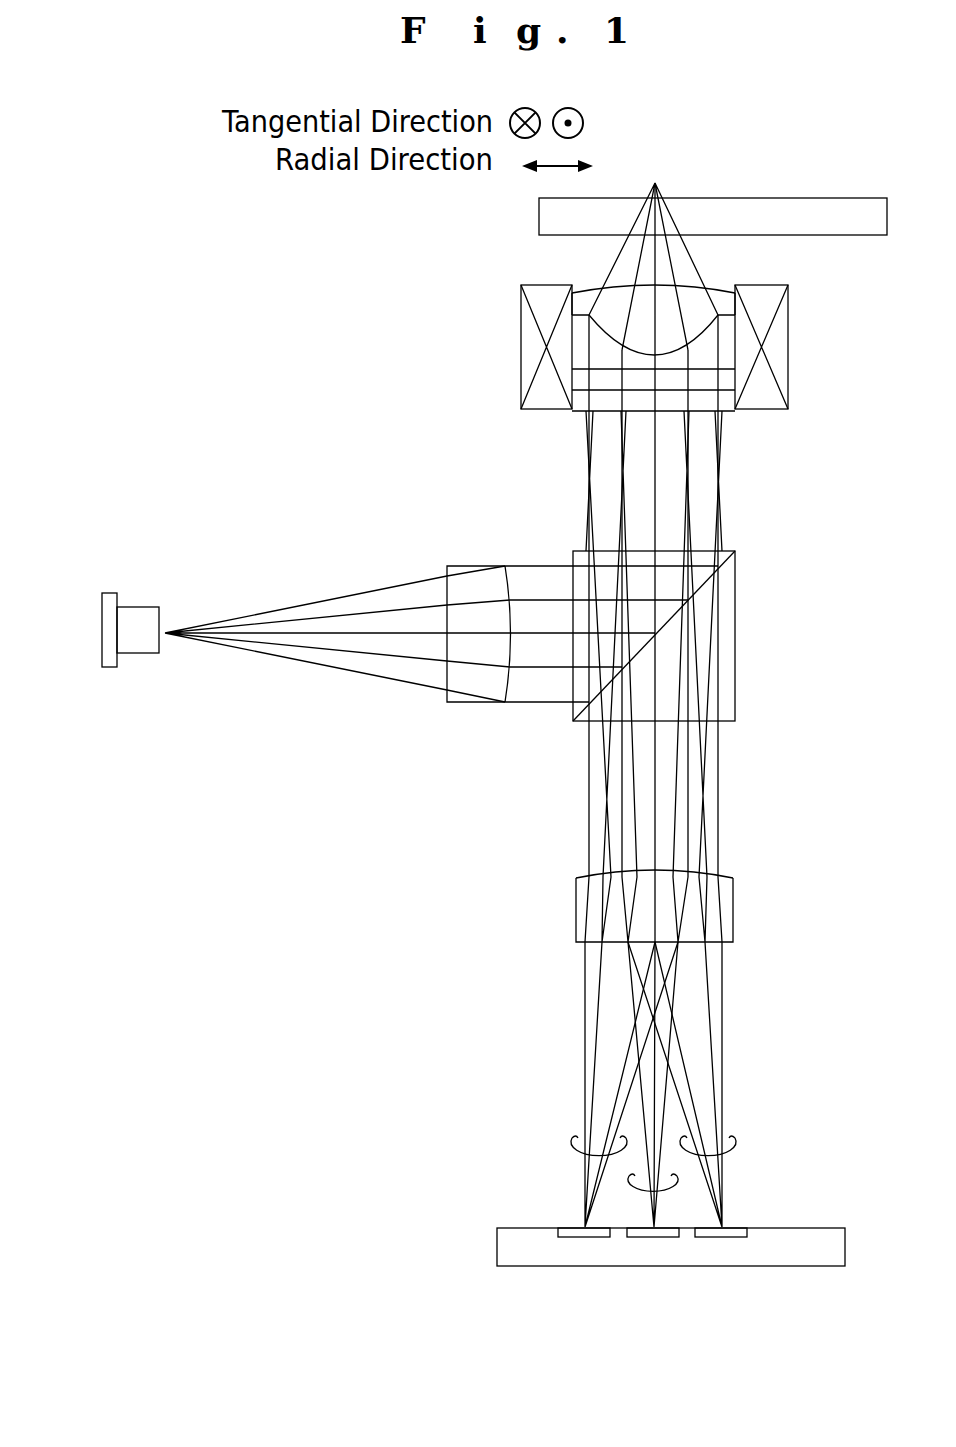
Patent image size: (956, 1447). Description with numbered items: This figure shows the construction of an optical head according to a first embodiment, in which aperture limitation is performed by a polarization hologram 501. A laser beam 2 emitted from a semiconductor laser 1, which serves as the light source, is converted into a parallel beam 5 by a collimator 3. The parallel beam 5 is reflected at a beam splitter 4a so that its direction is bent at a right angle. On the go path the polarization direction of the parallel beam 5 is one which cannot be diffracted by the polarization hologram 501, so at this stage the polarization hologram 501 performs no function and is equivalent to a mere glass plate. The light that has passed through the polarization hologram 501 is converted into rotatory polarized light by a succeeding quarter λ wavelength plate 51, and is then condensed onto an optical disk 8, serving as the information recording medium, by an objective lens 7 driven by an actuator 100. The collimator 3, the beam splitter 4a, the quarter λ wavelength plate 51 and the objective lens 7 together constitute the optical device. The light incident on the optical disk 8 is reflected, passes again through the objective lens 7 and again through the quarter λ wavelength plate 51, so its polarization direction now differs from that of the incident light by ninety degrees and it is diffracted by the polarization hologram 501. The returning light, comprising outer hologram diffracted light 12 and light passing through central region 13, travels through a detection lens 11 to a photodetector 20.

The semiconductor laser 1 is at (97, 610).
The laser beam 2 is at (283, 635).
The collimator 3 is at (443, 703).
The beam splitter 4a is at (742, 577).
The parallel beam 5 is at (720, 472).
The objective lens 7 is at (585, 285).
The optical disk 8 is at (745, 196).
The detection lens 11 is at (737, 880).
The outer hologram diffracted light 12 is at (673, 1143).
The light passing through central region 13 is at (682, 1185).
The photodetector 20 is at (494, 1240).
The quarter λ wavelength plate 51 is at (598, 414).
The polarization hologram 501 is at (598, 389).
The actuator 100 is at (518, 320).